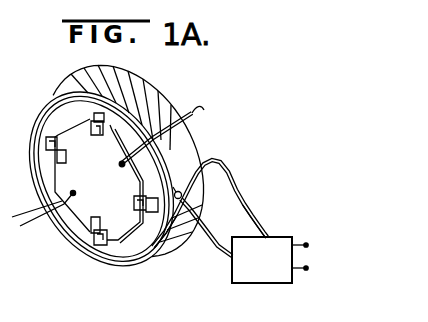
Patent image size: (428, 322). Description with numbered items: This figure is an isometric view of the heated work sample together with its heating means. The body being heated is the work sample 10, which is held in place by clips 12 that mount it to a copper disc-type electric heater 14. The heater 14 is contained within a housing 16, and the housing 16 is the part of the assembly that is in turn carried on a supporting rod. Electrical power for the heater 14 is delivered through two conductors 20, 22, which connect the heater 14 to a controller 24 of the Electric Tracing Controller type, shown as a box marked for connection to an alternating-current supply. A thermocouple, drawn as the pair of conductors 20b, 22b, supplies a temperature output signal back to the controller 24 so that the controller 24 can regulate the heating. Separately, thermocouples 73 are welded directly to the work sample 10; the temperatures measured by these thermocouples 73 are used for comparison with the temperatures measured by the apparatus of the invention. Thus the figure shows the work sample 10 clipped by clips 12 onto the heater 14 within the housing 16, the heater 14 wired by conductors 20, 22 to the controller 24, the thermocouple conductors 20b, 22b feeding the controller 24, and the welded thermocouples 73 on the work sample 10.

The work sample 10 is at (80, 207).
The clips 12 is at (62, 122).
The copper disc-type electric heater 14 is at (143, 162).
The housing 16 is at (163, 112).
The conductor 20 is at (234, 175).
The thermocouple conductor 20b is at (220, 250).
The conductor 22 is at (249, 212).
The thermocouple conductor 22b is at (202, 240).
The controller 24 is at (278, 269).
The thermocouples 73 is at (120, 165).